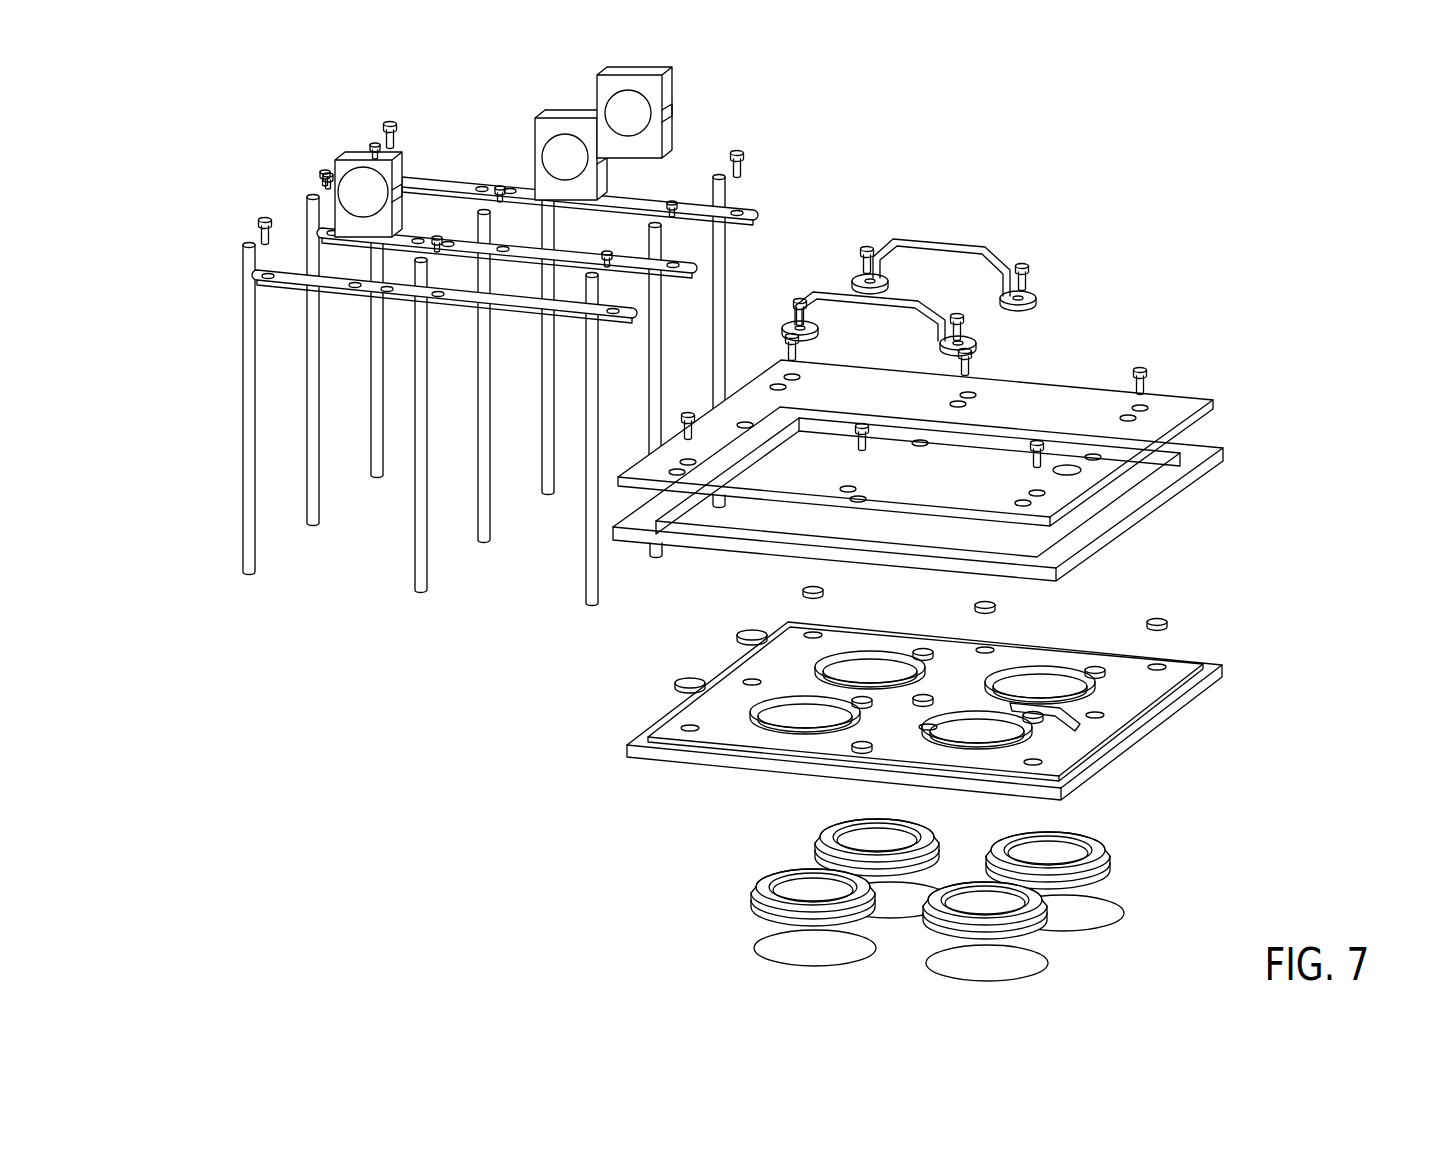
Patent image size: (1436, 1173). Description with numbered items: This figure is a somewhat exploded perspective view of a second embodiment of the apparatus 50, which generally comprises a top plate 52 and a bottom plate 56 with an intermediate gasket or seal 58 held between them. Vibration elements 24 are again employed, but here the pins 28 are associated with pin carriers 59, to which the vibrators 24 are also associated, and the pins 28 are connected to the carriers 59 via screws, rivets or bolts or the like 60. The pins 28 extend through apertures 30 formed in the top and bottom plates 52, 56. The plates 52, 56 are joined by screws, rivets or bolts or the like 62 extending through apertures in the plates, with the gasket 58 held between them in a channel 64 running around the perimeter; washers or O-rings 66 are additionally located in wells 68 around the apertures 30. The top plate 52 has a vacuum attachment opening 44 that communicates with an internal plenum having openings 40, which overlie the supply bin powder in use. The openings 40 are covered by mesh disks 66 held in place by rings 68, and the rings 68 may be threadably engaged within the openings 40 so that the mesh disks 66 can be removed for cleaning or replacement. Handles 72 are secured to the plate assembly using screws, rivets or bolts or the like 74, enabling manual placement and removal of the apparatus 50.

The vibration element 24 is at (335, 160).
The pin 28 is at (727, 297).
The aperture 30 is at (800, 378).
The opening 40 is at (882, 655).
The vacuum attachment opening 44 is at (1068, 465).
The apparatus 50 is at (1097, 300).
The top plate 52 is at (1213, 407).
The bottom plate 56 is at (1210, 690).
The gasket 58 is at (1223, 455).
The pin carrier 59 is at (448, 182).
The screw 60 is at (384, 124).
The screw 62 is at (868, 418).
The channel 64 is at (1140, 722).
The mesh disk 66 is at (740, 633).
The ring 68 is at (710, 745).
The handle 72 is at (913, 298).
The screw 74 is at (800, 299).